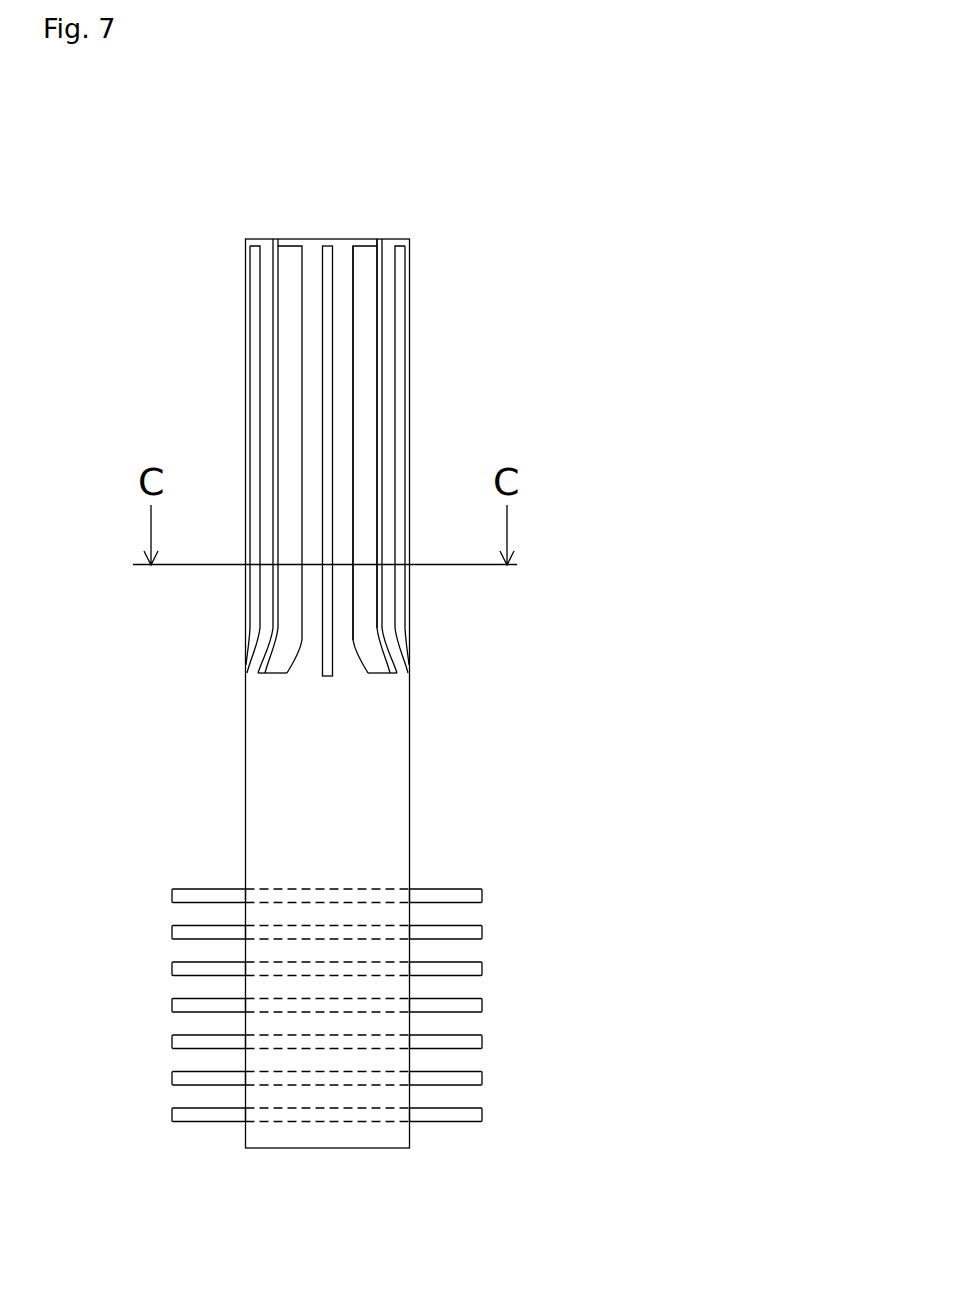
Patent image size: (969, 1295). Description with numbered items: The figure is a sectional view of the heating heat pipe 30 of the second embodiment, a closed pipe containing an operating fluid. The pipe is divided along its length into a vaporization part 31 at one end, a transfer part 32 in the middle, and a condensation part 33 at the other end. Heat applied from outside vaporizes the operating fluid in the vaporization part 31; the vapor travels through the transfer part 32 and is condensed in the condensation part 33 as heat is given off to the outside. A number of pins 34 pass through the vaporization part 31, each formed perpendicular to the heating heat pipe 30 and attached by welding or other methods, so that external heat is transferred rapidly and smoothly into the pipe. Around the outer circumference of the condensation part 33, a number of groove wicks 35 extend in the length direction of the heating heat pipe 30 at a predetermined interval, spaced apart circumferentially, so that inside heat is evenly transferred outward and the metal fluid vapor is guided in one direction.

The heating heat pipe 30 is at (431, 668).
The vaporization part 31 is at (370, 913).
The transfer part 32 is at (300, 772).
The condensation part 33 is at (312, 309).
The pins 34 is at (228, 1043).
The groove wicks 35 is at (363, 417).